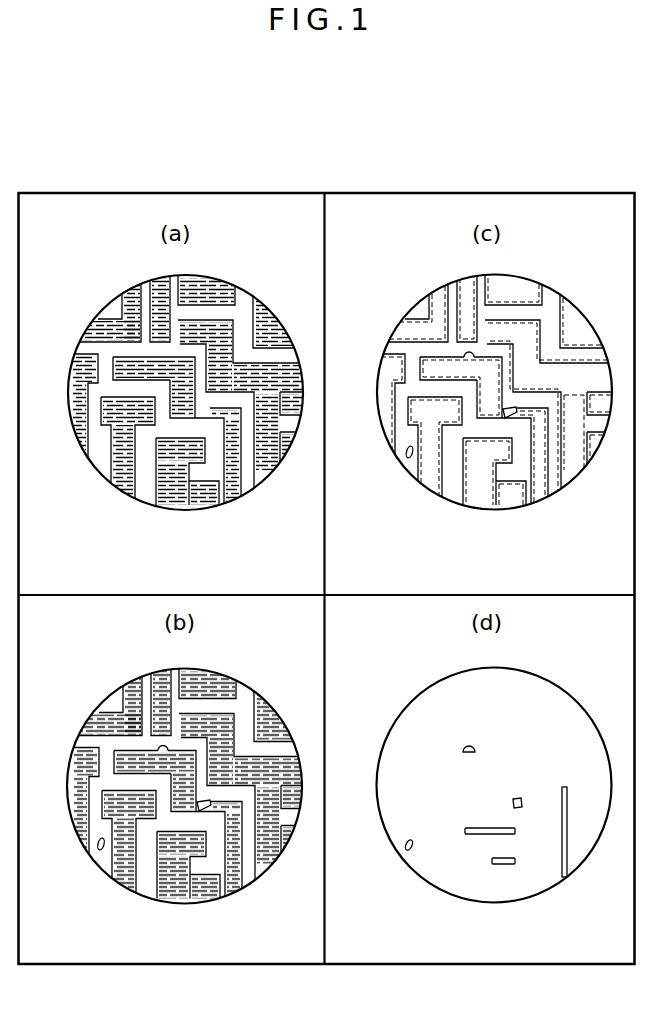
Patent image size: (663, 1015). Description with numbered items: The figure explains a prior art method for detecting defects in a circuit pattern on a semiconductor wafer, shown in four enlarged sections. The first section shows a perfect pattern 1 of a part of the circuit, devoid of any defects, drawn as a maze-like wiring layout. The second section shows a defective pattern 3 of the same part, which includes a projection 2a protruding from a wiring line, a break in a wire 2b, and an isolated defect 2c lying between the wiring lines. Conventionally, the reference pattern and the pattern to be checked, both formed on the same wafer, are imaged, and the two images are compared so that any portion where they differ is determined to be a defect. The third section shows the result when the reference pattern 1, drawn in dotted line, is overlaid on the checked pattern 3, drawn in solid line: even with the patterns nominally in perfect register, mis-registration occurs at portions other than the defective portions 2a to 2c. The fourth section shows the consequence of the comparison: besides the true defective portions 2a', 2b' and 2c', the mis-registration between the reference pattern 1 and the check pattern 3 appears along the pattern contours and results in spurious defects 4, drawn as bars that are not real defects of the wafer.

The perfect pattern 1 is at (131, 295).
The projection 2a is at (256, 536).
The break in a wire 2b is at (379, 676).
The isolated defect 2c is at (247, 683).
The defective pattern 3 is at (130, 688).
The defective portion 2a' is at (448, 728).
The defective portion 2b' is at (493, 786).
The defective portion 2c' is at (412, 820).
The spurious defects 4 is at (508, 834).